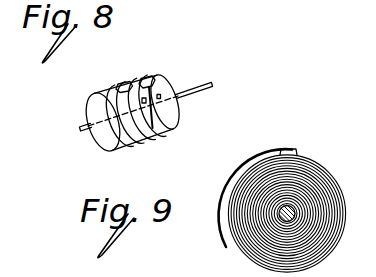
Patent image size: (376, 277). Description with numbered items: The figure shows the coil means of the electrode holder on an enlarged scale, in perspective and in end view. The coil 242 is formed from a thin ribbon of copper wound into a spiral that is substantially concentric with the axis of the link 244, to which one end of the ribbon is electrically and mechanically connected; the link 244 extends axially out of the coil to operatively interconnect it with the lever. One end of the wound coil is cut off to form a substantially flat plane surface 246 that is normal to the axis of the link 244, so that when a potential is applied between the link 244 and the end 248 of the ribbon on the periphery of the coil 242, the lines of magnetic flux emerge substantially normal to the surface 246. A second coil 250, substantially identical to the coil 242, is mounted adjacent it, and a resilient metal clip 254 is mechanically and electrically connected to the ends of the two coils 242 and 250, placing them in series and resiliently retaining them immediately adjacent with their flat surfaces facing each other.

In FIG. 8, the coil 242 is at (162, 78).
In FIG. 9, the coil 242 is at (245, 260).
In FIG. 8, the link 244 is at (193, 91).
In FIG. 9, the plane surface 246 is at (297, 167).
In FIG. 9, the end of the ribbon 248 is at (287, 149).
In FIG. 8, the second coil 250 is at (96, 93).
In FIG. 8, the metal clip 254 is at (160, 133).